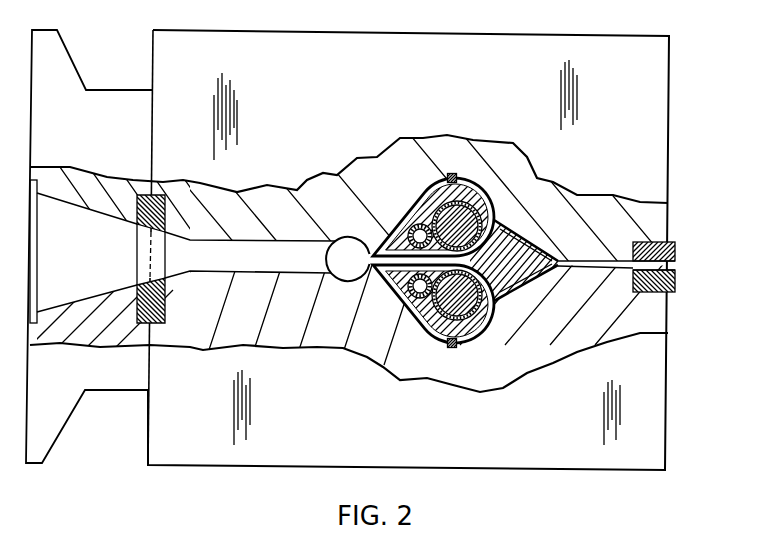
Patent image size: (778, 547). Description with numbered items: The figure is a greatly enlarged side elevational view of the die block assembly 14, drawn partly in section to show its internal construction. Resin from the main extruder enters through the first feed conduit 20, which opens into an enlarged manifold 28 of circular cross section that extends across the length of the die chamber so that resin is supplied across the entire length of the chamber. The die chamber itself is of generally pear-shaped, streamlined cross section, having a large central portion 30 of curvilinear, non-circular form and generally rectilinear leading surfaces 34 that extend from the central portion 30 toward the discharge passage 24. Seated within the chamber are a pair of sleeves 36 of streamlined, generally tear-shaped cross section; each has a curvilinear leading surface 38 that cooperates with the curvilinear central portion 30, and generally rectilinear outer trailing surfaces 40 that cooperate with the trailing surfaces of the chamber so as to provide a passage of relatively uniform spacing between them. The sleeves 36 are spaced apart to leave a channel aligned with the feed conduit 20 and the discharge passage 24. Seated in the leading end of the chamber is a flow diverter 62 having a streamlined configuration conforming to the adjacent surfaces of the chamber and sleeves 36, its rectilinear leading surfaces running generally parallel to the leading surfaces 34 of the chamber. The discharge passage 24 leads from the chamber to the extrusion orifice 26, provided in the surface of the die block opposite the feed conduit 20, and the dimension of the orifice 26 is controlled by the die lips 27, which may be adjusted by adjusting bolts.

The die block assembly 14 is at (670, 162).
The first feed conduit 20 is at (289, 241).
The discharge passage 24 is at (598, 259).
The extrusion orifice 26 is at (676, 264).
The die lips 27 is at (676, 247).
The enlarged manifold 28 is at (342, 234).
The central portion 30 is at (460, 348).
The leading surfaces 34 is at (527, 284).
The sleeves 36 is at (418, 188).
The curvilinear leading surface 38 is at (476, 190).
The outer trailing surfaces 40 is at (399, 222).
The flow diverter 62 is at (523, 235).